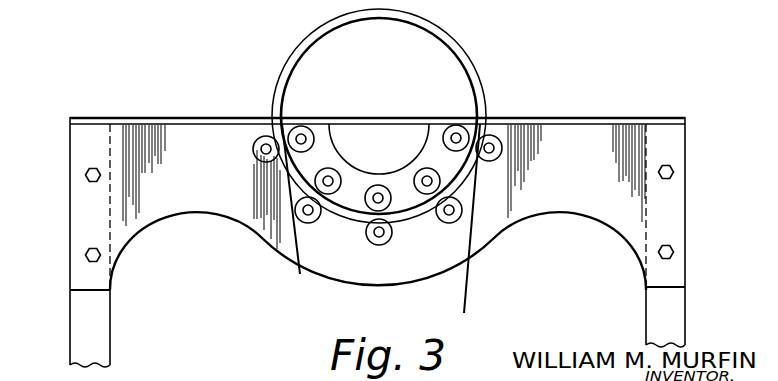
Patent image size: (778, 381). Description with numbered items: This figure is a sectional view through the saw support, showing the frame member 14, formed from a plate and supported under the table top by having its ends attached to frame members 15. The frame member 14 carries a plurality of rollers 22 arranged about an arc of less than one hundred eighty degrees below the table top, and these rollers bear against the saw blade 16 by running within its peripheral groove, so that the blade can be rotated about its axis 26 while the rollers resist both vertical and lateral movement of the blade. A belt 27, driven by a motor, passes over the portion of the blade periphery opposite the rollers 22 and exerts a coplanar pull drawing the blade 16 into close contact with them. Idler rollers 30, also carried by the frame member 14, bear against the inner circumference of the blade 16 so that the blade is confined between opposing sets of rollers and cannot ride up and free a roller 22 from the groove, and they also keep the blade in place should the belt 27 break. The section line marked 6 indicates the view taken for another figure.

The frame member 14 is at (152, 224).
The frame members 15 is at (110, 333).
The saw blade 16 is at (453, 37).
The rollers 22 is at (256, 141).
The axis 26 is at (380, 117).
The belt 27 is at (468, 281).
The idler rollers 30 is at (452, 125).
The section line indicator 6 is at (343, 105).